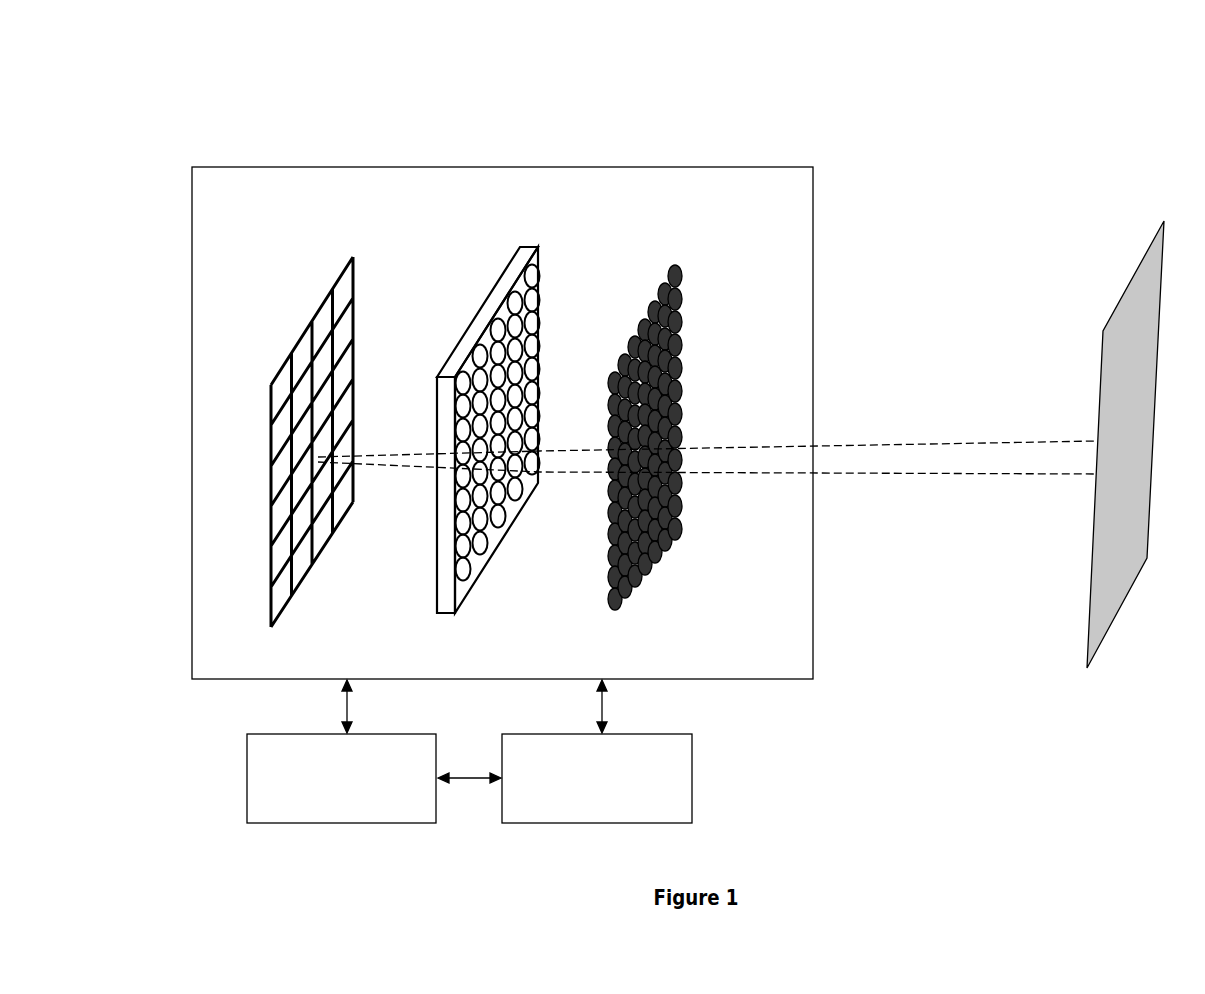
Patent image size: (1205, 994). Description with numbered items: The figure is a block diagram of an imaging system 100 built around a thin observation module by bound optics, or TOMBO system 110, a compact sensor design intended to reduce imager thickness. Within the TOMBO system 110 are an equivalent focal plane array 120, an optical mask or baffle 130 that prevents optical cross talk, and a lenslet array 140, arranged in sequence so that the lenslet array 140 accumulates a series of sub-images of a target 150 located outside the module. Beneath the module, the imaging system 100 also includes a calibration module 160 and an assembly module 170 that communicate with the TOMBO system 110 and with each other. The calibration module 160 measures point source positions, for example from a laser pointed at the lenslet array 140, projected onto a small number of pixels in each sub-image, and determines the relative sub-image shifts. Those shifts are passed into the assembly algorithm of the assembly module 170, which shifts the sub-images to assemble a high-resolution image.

The imaging system 100 is at (125, 83).
The thin observation module by bound optics (TOMBO) system 110 is at (492, 157).
The equivalent focal plane array 120 is at (300, 292).
The optical mask (or baffle) 130 is at (478, 271).
The lenslet array 140 is at (643, 260).
The target 150 is at (1110, 271).
The calibration module 160 is at (341, 751).
The assembly module 170 is at (597, 751).